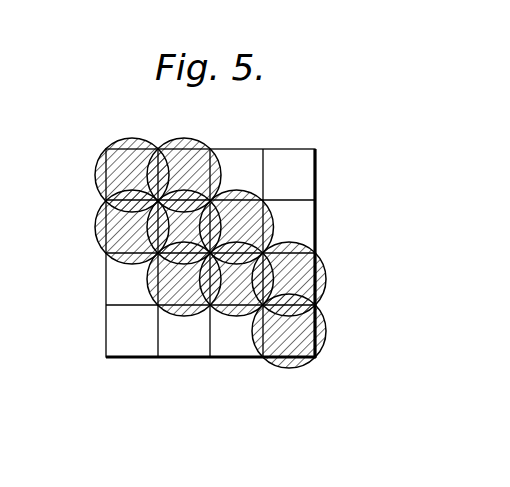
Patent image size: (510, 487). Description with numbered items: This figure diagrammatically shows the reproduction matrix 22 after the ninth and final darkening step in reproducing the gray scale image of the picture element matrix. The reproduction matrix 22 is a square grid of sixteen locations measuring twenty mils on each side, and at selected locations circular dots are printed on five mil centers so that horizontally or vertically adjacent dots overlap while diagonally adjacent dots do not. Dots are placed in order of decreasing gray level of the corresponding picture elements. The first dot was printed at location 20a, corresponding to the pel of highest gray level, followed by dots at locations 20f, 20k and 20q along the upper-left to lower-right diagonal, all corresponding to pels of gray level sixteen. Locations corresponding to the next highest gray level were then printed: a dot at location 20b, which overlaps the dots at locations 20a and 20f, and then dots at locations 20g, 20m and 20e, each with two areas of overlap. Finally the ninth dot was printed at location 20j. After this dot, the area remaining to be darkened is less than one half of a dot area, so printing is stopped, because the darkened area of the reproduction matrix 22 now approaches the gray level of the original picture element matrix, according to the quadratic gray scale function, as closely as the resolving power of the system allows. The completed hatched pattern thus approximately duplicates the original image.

The reproduction matrix 22 is at (316, 167).
The reproduction matrix location 20a is at (127, 139).
The reproduction matrix location 20b is at (190, 139).
The reproduction matrix location 20e is at (95, 228).
The reproduction matrix location 20f is at (148, 233).
The reproduction matrix location 20g is at (274, 221).
The reproduction matrix location 20j is at (183, 317).
The reproduction matrix location 20k is at (243, 313).
The reproduction matrix location 20m is at (326, 280).
The reproduction matrix location 20q is at (328, 333).